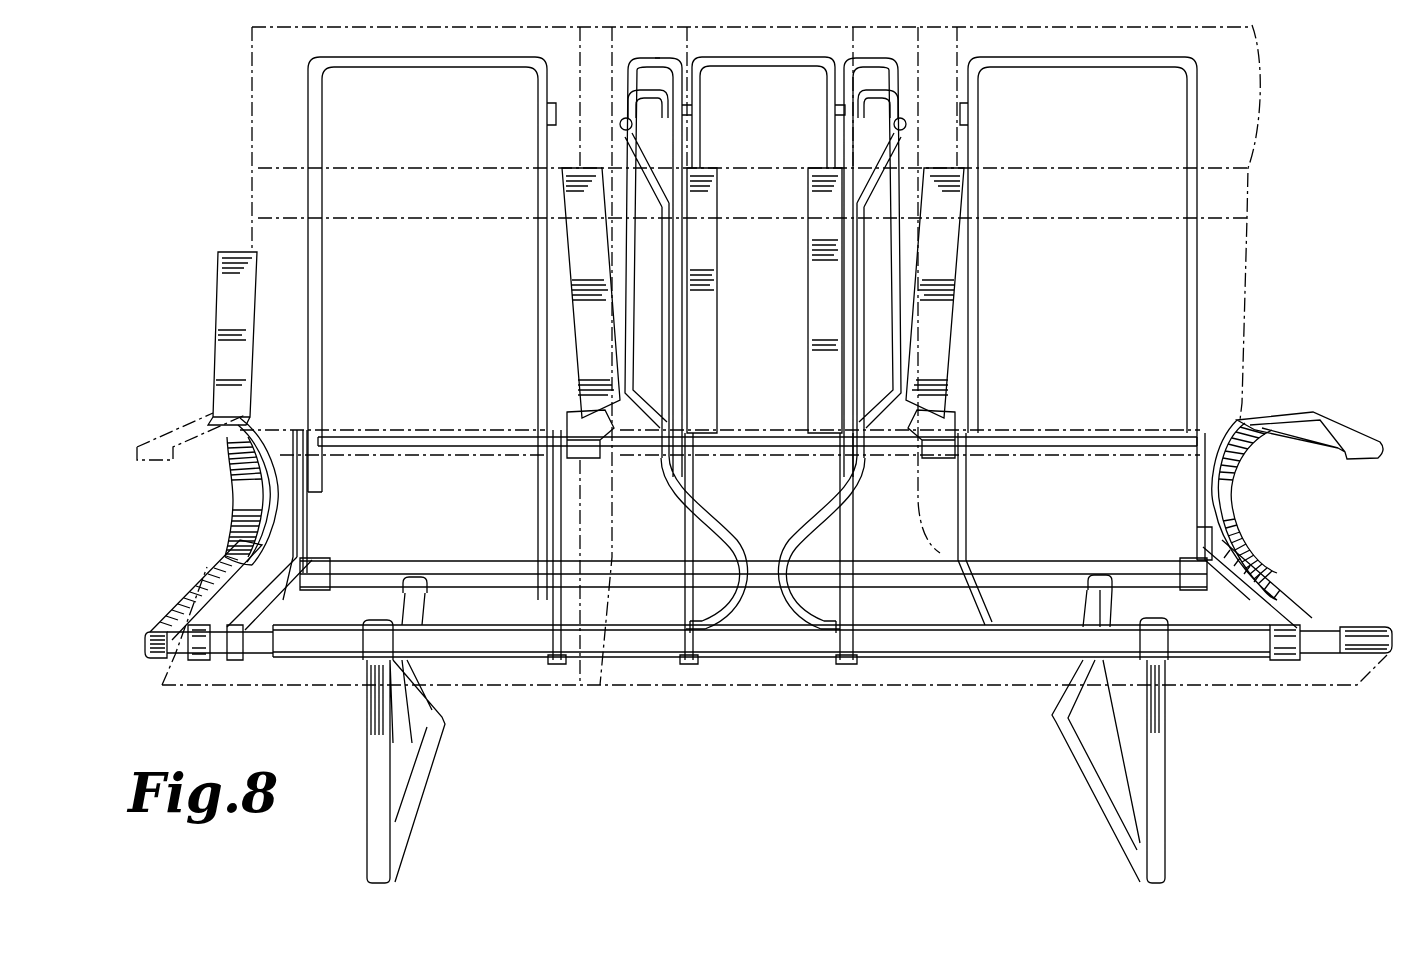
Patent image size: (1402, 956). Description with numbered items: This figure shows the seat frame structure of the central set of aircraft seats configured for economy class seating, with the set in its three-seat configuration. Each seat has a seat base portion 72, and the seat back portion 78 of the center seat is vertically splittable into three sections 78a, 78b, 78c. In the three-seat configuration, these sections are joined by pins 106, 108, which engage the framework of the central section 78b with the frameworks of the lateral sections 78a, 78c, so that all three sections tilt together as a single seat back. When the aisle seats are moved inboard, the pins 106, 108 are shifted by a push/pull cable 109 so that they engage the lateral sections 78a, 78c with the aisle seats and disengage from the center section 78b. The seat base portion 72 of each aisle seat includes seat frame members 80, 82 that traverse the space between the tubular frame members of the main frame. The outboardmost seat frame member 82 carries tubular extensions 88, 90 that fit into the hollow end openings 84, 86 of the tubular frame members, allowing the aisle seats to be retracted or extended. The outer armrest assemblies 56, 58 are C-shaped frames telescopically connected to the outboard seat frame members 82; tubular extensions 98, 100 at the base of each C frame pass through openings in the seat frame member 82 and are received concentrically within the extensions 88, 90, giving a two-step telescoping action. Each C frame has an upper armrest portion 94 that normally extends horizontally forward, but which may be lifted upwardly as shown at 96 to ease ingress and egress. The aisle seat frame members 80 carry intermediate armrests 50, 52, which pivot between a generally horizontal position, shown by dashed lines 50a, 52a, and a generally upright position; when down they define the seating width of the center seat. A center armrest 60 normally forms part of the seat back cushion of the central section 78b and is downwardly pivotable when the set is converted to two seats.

The intermediate armrest 50 is at (583, 305).
The horizontal position of intermediate armrest 50a is at (580, 425).
The intermediate armrest 52 is at (935, 262).
The horizontal position of intermediate armrest 52a is at (988, 418).
The outer armrest assembly 56 is at (245, 473).
The outer armrest assembly 58 is at (1250, 468).
The center armrest 60 is at (775, 318).
The seat base portion 72 is at (1303, 594).
The seat back portion 78 is at (620, 88).
The lateral seat back section 78a is at (652, 57).
The central seat back section 78b is at (758, 68).
The lateral seat back section 78c is at (890, 53).
The seat frame member 80 is at (548, 662).
The outboard seat frame member 82 is at (324, 561).
The outer end of tubular frame member 84 is at (330, 561).
The outer end of tubular frame member 86 is at (268, 660).
The tubular extension 88 is at (1212, 535).
The tubular extension 90 is at (1345, 622).
The upper armrest portion 94 is at (1325, 412).
The lifted position of upper armrest portion 96 is at (212, 285).
The tubular extension 98 is at (197, 655).
The tubular extension 100 is at (232, 548).
The pin 106 is at (625, 128).
The pin 108 is at (900, 136).
The push/pull cable 109 is at (720, 660).